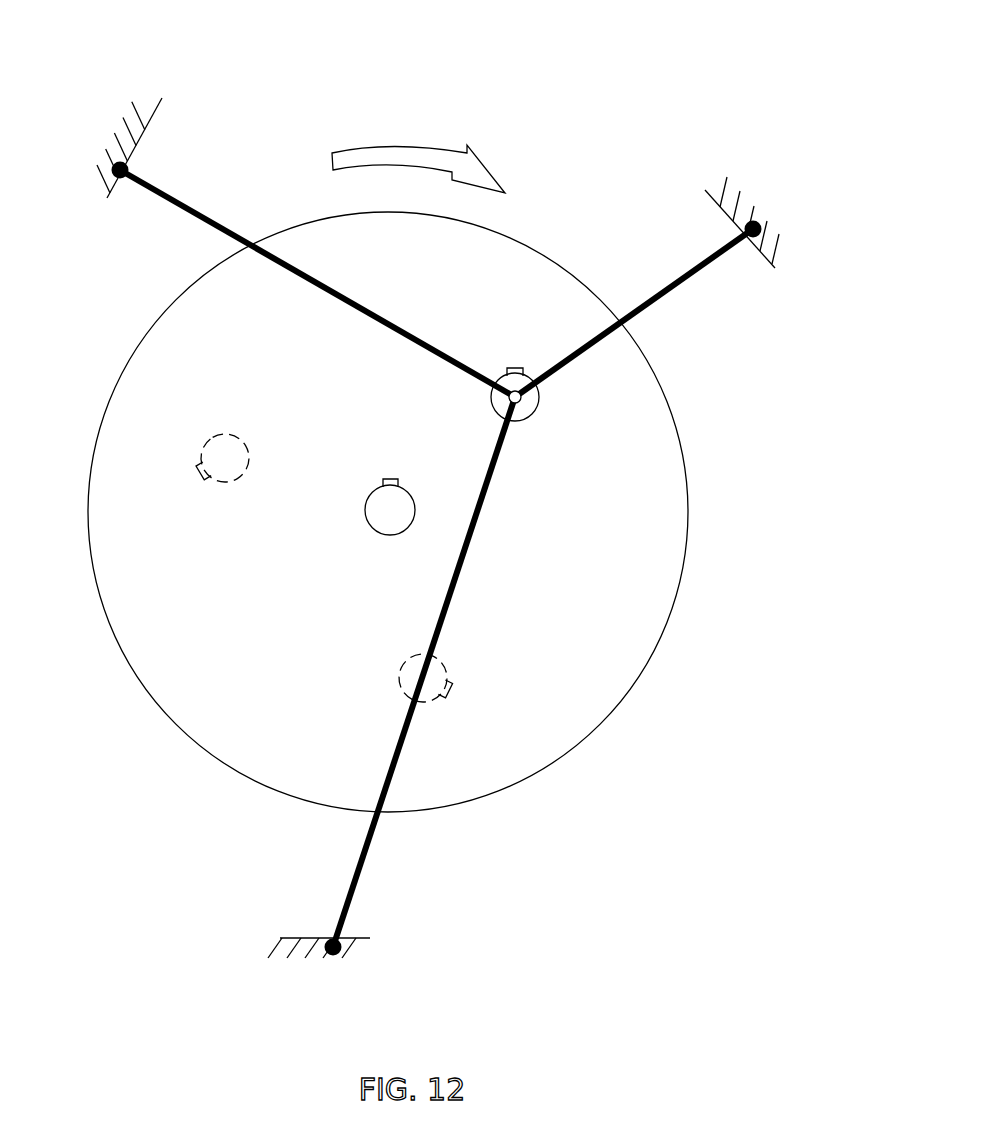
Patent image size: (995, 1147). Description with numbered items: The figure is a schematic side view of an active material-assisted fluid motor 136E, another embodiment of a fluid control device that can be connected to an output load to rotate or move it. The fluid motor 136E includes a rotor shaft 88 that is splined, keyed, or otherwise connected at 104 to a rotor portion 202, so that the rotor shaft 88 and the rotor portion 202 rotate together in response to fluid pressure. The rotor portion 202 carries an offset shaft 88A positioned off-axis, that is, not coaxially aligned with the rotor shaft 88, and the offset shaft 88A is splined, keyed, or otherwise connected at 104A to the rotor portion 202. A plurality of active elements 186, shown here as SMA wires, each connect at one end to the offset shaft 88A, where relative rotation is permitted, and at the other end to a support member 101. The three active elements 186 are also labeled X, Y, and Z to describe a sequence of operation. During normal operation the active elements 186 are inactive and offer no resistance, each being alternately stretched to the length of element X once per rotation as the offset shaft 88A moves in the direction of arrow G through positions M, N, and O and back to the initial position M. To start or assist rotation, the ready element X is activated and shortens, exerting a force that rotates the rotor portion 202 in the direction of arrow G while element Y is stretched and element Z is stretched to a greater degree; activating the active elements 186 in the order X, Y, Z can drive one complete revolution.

The rotor portion 202 is at (688, 538).
The active elements 186 is at (187, 204).
The support member 101 is at (147, 120).
The connection of offset shaft to rotor portion 104A is at (517, 369).
The offset shaft 88A is at (530, 402).
The rotor shaft 88 is at (373, 508).
The connection of rotor shaft to rotor portion 104 is at (390, 479).
The fluid motor 136E is at (515, 66).
The arrow G is at (396, 144).
The active element Y is at (202, 235).
The active element Z is at (690, 292).
The position M is at (530, 433).
The active element X is at (402, 765).
The position O is at (190, 485).
The position N is at (455, 680).